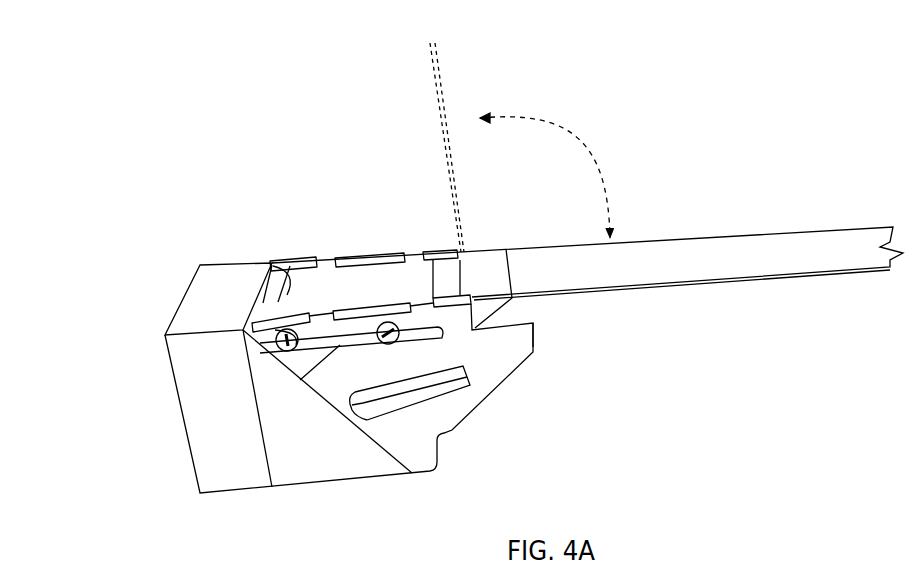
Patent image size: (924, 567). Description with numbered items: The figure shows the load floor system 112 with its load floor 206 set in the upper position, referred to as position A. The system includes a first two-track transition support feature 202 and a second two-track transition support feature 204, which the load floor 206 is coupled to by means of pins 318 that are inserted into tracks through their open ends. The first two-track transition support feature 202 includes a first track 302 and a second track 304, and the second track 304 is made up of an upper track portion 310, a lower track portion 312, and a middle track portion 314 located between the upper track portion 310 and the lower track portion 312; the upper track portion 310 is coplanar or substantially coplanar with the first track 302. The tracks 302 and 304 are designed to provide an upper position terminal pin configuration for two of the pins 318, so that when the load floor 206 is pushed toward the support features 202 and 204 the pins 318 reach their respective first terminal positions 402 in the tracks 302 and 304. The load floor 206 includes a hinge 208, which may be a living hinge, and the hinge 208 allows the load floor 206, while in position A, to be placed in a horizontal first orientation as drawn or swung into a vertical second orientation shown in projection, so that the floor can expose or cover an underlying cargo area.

The load floor system 112 is at (153, 175).
The first two-track transition support feature 202 is at (228, 310).
The second two-track transition support feature 204 is at (250, 248).
The load floor 206 is at (440, 130).
The hinge 208 is at (462, 272).
The first track 302 is at (313, 358).
The second track 304 is at (352, 408).
The upper track portion 310 is at (421, 344).
The lower track portion 312 is at (418, 398).
The middle track portion 314 is at (457, 337).
The pin 318 is at (287, 329).
The first terminal position 402 is at (275, 342).